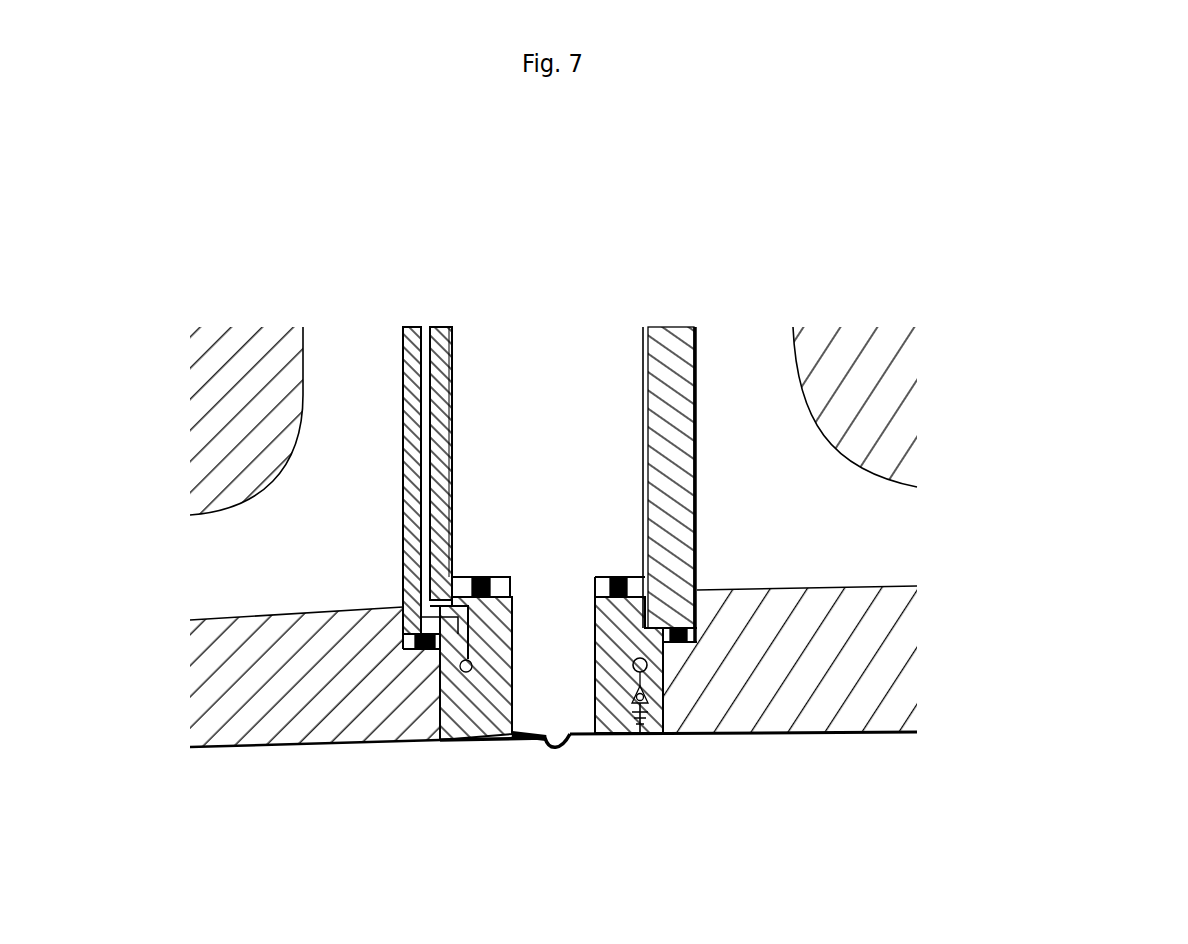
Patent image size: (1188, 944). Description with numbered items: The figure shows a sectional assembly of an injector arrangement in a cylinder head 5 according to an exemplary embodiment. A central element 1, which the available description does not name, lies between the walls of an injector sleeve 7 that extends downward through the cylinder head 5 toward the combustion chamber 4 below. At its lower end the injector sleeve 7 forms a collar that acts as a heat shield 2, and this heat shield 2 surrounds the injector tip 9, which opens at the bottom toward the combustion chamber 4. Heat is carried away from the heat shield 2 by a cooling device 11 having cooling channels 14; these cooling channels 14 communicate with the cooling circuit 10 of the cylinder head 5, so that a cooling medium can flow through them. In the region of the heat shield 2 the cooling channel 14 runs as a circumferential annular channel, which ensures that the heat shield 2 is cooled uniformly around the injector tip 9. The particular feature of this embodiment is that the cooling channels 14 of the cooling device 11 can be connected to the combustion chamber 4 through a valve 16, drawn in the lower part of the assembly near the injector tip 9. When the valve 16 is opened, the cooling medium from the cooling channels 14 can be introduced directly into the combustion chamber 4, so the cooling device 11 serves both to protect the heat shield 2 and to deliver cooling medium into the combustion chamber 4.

The channel 1 is at (558, 372).
The heat shield 2 is at (617, 737).
The combustion chamber 4 is at (368, 821).
The cylinder head 5 is at (905, 652).
The injector sleeve 7 is at (697, 338).
The injector tip 9 is at (560, 750).
The cooling circuit 10 is at (358, 551).
The cooling device 11 is at (455, 536).
The cooling channels 14 is at (612, 580).
The valve 16 is at (668, 733).